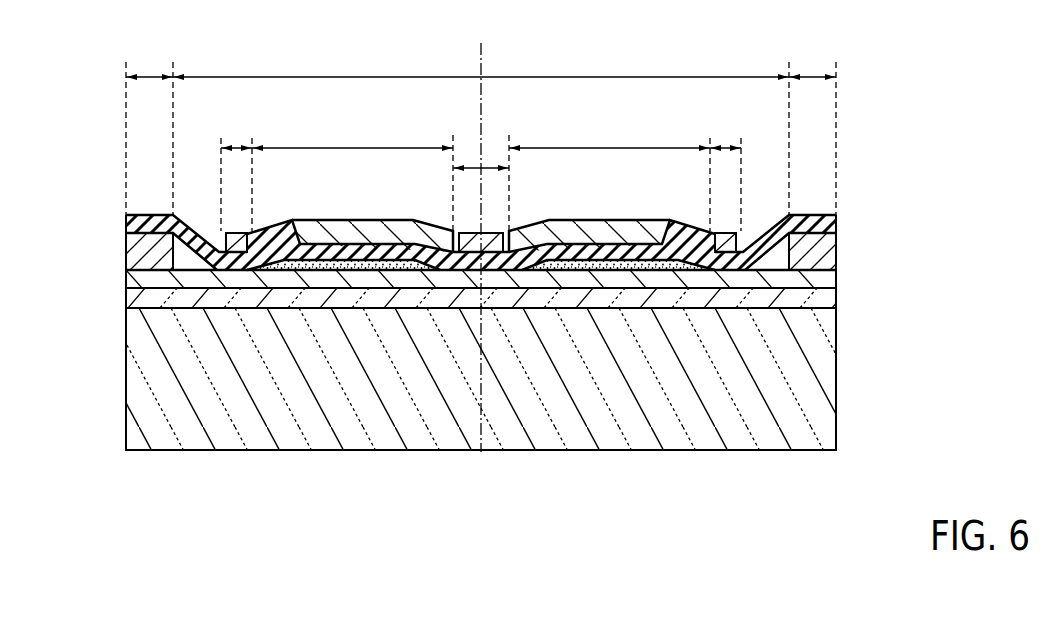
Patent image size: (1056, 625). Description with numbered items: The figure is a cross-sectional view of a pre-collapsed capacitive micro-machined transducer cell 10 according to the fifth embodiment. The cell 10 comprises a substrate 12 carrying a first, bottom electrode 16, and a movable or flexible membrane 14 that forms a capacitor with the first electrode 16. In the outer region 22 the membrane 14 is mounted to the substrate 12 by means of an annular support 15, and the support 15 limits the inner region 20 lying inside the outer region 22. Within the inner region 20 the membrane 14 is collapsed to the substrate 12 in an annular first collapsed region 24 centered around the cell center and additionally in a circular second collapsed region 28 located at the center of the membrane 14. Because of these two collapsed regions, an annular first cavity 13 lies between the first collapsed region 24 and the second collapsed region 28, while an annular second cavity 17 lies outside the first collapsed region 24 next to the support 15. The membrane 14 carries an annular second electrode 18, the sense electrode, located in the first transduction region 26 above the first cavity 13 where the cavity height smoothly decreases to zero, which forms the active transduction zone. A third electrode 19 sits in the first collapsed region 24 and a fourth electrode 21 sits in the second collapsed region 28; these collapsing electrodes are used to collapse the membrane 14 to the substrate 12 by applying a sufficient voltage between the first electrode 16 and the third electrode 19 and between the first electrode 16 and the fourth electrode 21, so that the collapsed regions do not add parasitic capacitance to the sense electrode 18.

The pre-collapsed capacitive micro-machined transducer cell 10 is at (950, 90).
The substrate 12 is at (882, 272).
The first cavity 13 is at (338, 259).
The membrane 14 is at (832, 222).
The support 15 is at (140, 251).
The first electrode 16 is at (832, 278).
The second cavity 17 is at (188, 262).
The second electrode 18 is at (381, 232).
The third electrode 19 is at (242, 232).
The inner region 20 is at (556, 75).
The fourth electrode 21 is at (489, 233).
The outer region 22 is at (148, 75).
The first collapsed region 24 is at (237, 146).
The first transduction region 26 is at (371, 146).
The second collapsed region 28 is at (494, 166).